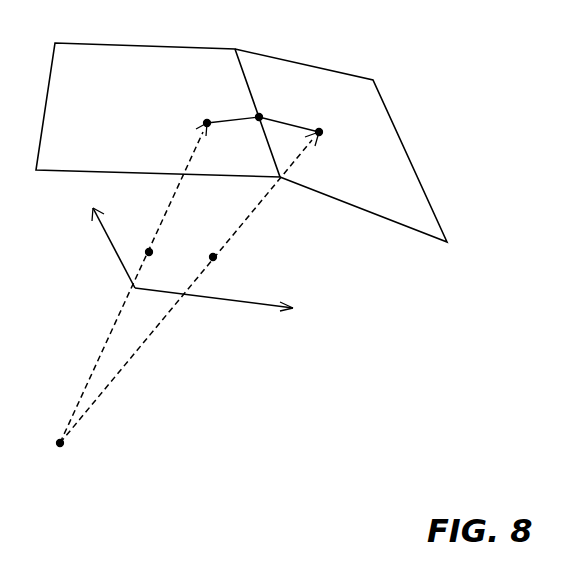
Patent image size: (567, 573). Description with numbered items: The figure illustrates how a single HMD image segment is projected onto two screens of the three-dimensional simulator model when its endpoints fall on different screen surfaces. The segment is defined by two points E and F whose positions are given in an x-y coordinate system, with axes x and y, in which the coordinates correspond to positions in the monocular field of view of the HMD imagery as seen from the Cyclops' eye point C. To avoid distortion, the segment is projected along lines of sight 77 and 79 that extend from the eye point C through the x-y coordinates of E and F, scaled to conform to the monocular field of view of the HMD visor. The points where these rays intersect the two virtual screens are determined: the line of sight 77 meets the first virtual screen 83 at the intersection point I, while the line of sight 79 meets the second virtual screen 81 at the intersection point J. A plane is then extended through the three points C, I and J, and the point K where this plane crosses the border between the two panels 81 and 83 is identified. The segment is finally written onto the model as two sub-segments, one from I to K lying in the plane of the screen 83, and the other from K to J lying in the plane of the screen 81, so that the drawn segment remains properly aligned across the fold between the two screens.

The virtual screen 83 is at (158, 88).
The virtual screen 81 is at (341, 135).
The line of sight 77 is at (100, 353).
The line of sight 79 is at (145, 343).
The Cyclops' eye point C is at (47, 448).
The intersection point I is at (205, 120).
The intersection point J is at (262, 116).
The border intersection point K is at (322, 136).
The segment endpoint E is at (147, 251).
The segment endpoint F is at (216, 257).
The x coordinate axis x is at (214, 312).
The y coordinate axis y is at (100, 248).